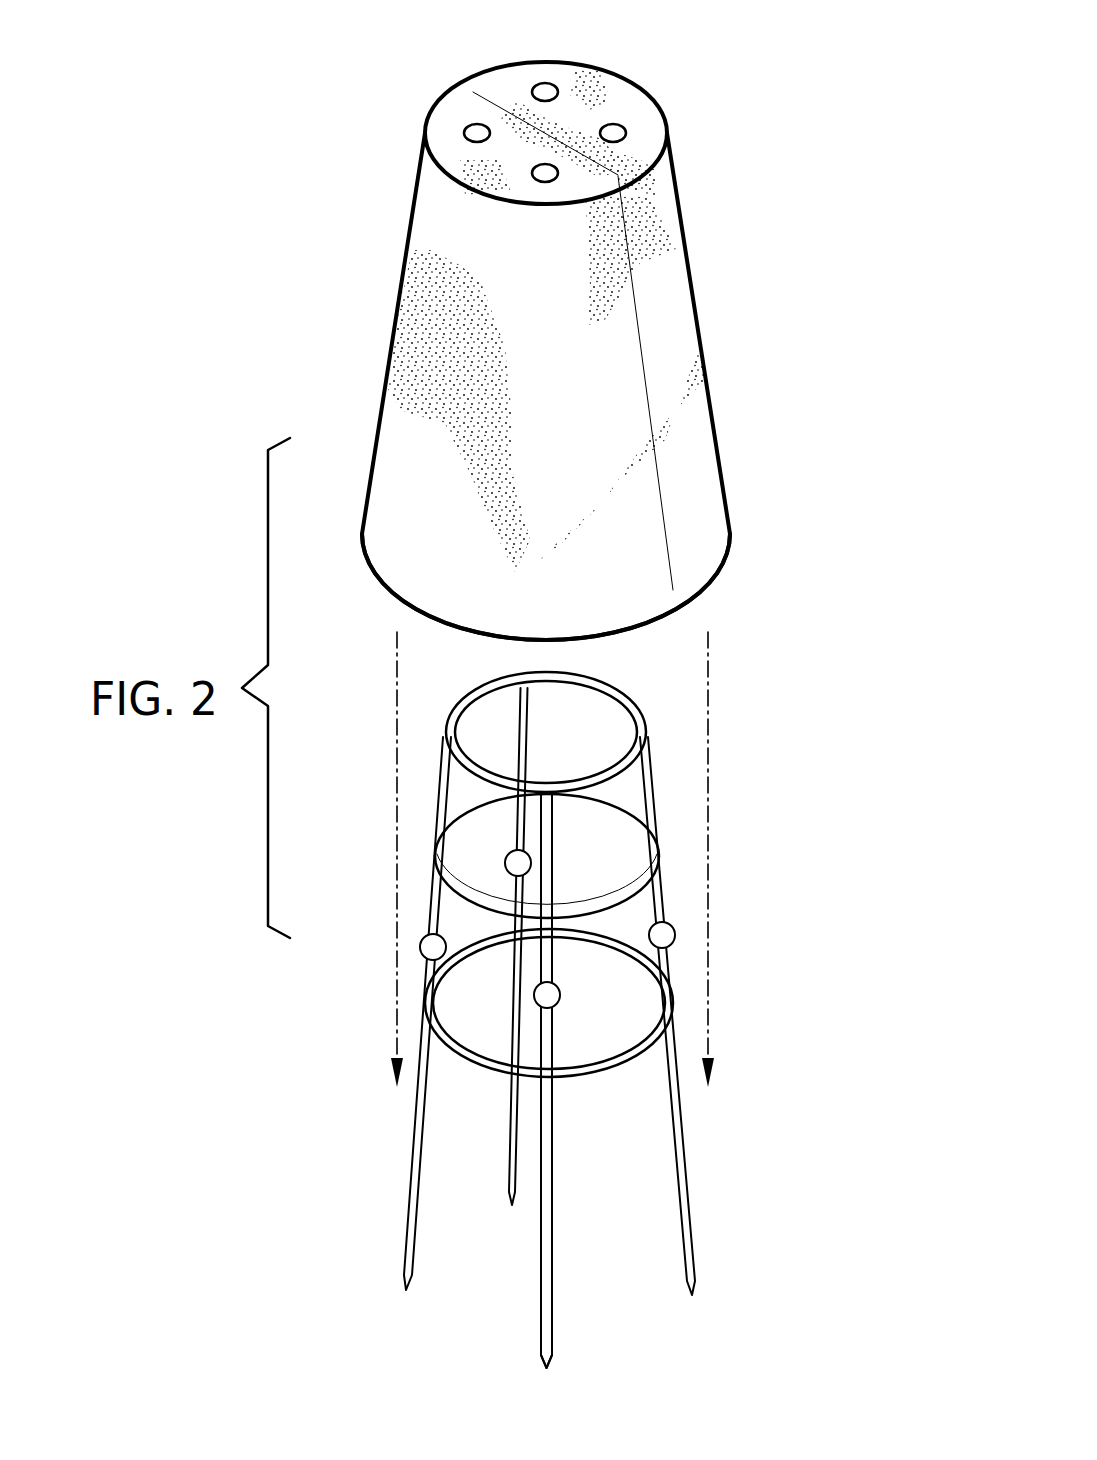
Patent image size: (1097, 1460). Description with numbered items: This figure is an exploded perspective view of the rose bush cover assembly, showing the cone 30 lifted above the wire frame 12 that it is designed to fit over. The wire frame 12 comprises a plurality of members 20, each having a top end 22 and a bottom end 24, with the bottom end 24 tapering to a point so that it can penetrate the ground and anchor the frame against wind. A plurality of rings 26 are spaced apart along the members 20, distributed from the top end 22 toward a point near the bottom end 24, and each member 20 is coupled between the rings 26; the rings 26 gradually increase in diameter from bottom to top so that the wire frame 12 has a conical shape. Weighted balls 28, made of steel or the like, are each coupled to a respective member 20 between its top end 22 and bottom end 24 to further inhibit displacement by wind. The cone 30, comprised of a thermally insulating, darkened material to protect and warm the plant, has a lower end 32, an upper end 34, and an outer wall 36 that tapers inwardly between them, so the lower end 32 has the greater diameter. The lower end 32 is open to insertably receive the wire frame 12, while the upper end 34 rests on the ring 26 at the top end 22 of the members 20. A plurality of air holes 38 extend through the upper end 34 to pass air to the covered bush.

The wire frame 12 is at (672, 847).
The members 20 is at (520, 818).
The top end 22 is at (548, 793).
The bottom end 24 is at (545, 1369).
The rings 26 is at (460, 703).
The balls 28 is at (432, 948).
The cone 30 is at (378, 273).
The lower end 32 is at (708, 578).
The upper end 34 is at (590, 98).
The outer wall 36 is at (676, 336).
The air holes 38 is at (533, 93).